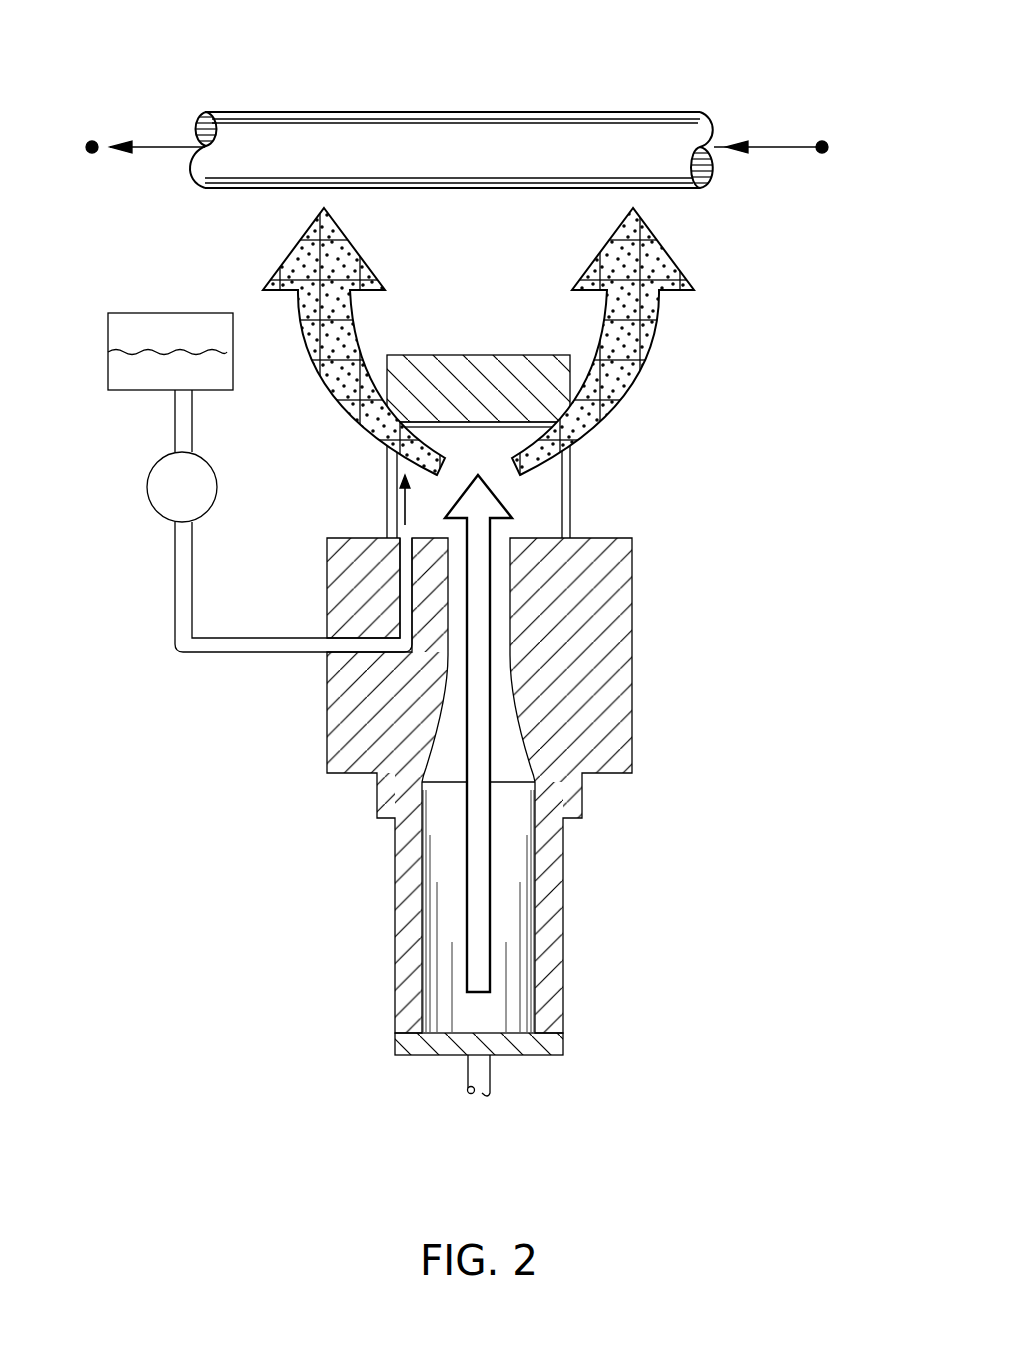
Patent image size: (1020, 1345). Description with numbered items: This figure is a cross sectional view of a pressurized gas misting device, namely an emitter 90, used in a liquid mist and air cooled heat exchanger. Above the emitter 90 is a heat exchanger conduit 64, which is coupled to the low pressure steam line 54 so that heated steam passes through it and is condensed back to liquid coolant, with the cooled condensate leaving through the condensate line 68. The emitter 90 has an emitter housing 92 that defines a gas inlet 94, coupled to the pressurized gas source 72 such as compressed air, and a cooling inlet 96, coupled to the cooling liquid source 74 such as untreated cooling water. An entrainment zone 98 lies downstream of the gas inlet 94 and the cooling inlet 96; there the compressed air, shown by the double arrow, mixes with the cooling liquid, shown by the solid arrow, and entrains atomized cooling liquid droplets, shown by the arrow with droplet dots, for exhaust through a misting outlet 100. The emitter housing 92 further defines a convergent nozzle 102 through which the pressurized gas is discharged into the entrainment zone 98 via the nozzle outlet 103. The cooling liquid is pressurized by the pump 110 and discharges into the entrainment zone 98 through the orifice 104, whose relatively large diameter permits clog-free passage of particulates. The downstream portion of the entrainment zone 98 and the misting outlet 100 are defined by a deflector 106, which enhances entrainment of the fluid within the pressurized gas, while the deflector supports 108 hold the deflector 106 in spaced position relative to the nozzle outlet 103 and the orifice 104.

The low pressure steam line 54 is at (774, 167).
The heat exchanger conduit 64 is at (277, 130).
The condensate line 68 is at (139, 167).
The pressurized gas source 72 is at (472, 1092).
The cooling liquid source 74 is at (118, 375).
The emitter 90 is at (604, 858).
The emitter housing 92 is at (606, 642).
The gas inlet 94 is at (481, 1040).
The cooling inlet 96 is at (407, 590).
The entrainment zone 98 is at (523, 510).
The misting outlet 100 is at (348, 446).
The convergent nozzle 102 is at (536, 840).
The nozzle outlet 103 is at (503, 540).
The orifice 104 is at (400, 517).
The deflector 106 is at (443, 378).
The deflector supports 108 is at (567, 470).
The pump 110 is at (175, 510).